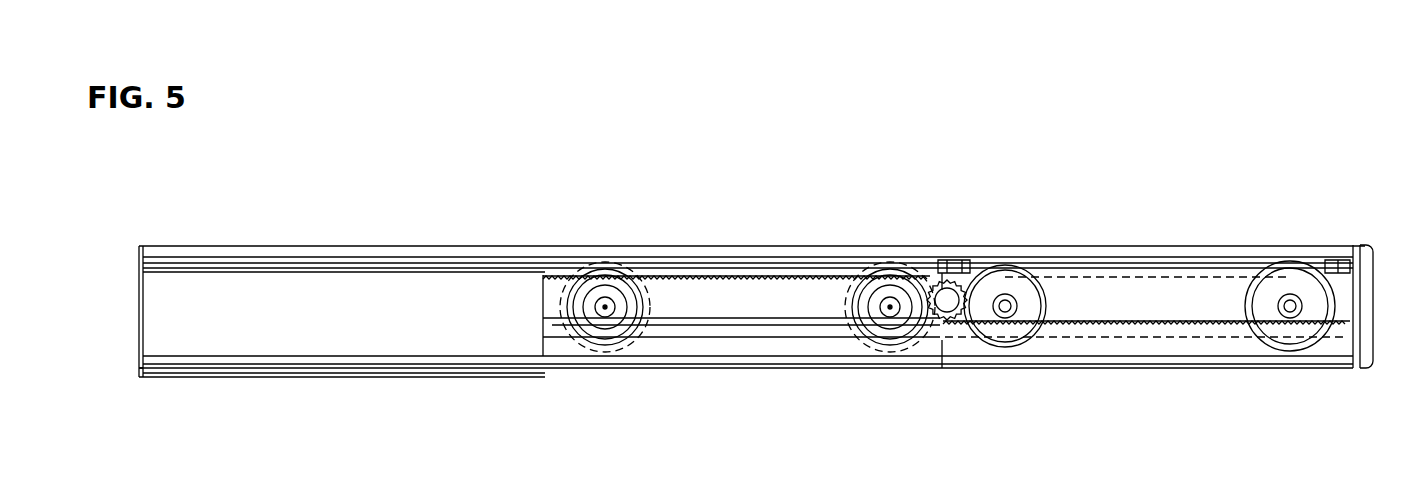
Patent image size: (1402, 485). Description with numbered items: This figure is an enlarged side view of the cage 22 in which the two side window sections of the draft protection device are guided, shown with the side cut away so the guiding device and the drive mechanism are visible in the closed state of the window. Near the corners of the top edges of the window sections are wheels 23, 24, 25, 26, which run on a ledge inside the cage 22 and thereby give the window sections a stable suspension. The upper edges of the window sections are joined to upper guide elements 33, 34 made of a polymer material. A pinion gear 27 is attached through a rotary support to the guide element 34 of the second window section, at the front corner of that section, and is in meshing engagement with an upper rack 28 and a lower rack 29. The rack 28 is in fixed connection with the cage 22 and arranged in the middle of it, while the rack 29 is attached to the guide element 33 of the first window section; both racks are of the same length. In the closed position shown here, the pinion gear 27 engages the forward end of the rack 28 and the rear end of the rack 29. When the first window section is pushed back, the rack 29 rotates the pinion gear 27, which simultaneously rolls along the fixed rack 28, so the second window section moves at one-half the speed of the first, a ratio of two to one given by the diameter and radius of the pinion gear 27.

The cage 22 is at (190, 236).
The wheel 23 is at (610, 293).
The wheel 24 is at (878, 262).
The wheel 25 is at (1003, 294).
The wheel 26 is at (1293, 294).
The pinion gear 27 is at (948, 288).
The upper rack 28 is at (727, 275).
The lower rack 29 is at (1135, 324).
The upper guide element 33 is at (1103, 300).
The upper guide element 34 is at (766, 305).